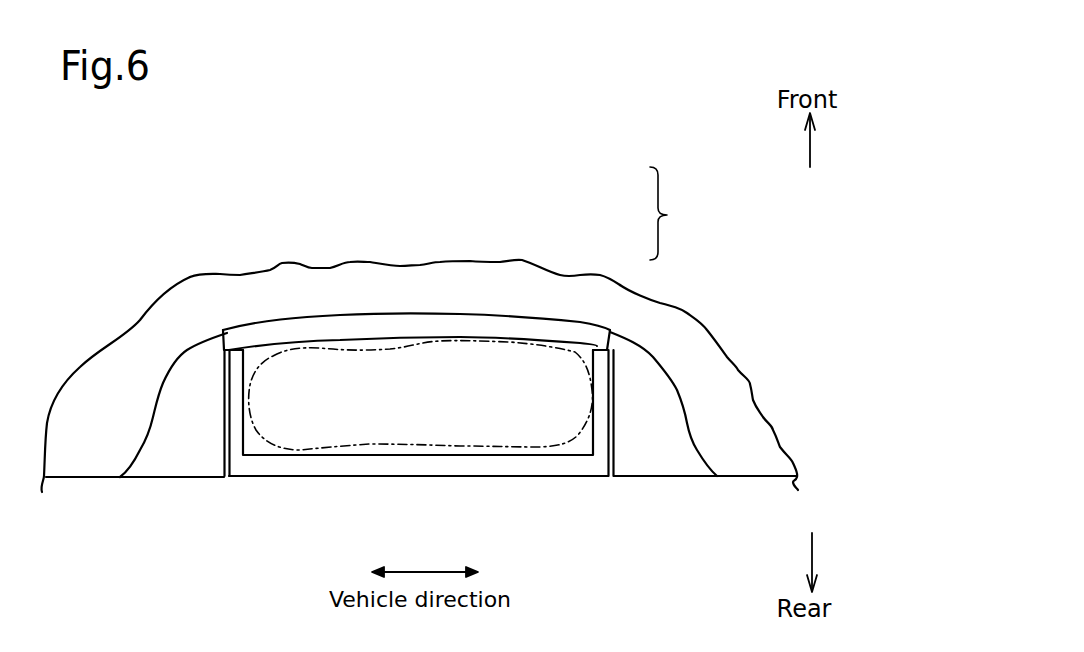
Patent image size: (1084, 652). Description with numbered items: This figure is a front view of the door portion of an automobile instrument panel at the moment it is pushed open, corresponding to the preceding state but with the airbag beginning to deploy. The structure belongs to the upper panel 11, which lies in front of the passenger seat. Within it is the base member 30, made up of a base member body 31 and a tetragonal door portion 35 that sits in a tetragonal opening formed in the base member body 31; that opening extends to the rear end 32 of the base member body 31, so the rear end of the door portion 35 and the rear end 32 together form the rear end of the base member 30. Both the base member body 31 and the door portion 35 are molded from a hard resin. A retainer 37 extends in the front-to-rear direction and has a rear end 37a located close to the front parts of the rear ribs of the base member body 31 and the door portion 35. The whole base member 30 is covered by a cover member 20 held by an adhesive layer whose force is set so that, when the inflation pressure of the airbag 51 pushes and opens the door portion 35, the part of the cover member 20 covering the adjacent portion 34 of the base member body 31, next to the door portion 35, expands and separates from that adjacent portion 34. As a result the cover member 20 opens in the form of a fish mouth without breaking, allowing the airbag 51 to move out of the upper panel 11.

The upper panel 11 is at (707, 267).
The cover member 20 is at (428, 273).
The base member 30 is at (674, 213).
The base member body 31 is at (425, 326).
The adjacent portion 34 is at (177, 397).
The door portion 35 is at (590, 333).
The retainer 37 is at (419, 443).
The rear end 37a is at (403, 462).
The rear end 32 is at (173, 465).
The airbag 51 is at (565, 443).